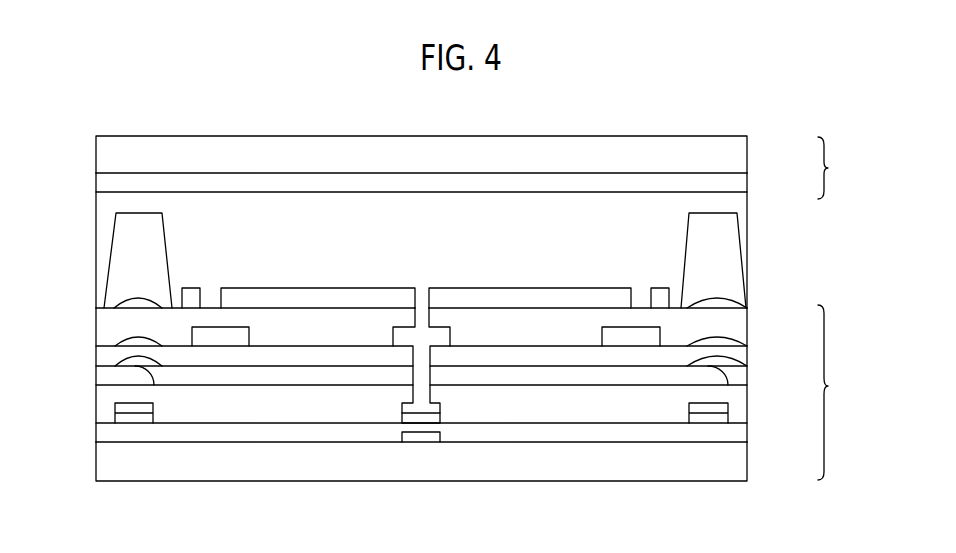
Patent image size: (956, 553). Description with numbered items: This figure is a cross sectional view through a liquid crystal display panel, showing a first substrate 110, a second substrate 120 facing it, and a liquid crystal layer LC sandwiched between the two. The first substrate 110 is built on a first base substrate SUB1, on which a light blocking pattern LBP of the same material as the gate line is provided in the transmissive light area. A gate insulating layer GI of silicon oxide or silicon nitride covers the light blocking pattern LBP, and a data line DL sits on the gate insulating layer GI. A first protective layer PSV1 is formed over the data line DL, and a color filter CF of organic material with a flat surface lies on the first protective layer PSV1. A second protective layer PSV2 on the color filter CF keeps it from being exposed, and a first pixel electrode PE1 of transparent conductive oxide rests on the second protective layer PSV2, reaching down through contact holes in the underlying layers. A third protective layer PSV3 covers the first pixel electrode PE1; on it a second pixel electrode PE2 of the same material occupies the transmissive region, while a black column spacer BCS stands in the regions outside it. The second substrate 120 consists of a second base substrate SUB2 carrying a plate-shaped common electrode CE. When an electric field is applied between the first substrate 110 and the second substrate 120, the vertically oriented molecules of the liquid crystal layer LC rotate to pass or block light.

The second base substrate SUB2 is at (737, 150).
The common electrode CE is at (737, 183).
The second substrate 120 is at (841, 168).
The liquid crystal layer LC is at (665, 253).
The black column spacer BCS is at (120, 268).
The third protective layer PSV3 is at (740, 322).
The second pixel electrode PE2 is at (369, 296).
The first pixel electrode PE1 is at (437, 333).
The second protective layer PSV2 is at (740, 354).
The color filter CF is at (740, 374).
The first protective layer PSV1 is at (740, 407).
The data line DL is at (112, 408).
The gate insulating layer GI is at (740, 433).
The light blocking pattern LBP is at (424, 437).
The first base substrate SUB1 is at (740, 463).
The first substrate 110 is at (841, 392).